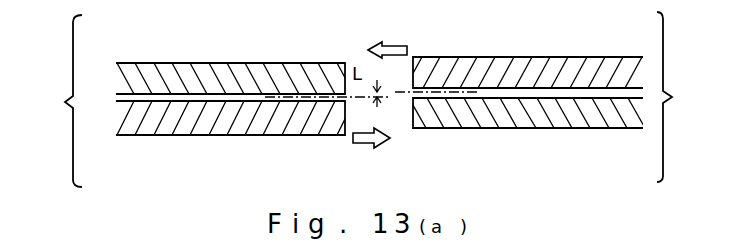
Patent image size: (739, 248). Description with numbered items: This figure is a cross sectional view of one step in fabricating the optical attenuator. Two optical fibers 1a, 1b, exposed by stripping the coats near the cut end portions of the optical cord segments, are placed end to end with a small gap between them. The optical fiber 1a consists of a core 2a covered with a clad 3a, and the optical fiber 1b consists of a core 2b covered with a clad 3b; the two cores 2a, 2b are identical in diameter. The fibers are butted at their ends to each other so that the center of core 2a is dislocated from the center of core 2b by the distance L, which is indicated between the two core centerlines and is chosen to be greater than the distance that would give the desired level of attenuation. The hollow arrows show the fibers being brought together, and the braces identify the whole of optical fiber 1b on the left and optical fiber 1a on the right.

The optical fiber 1a is at (555, 97).
The optical fiber 1b is at (203, 101).
The core 2a is at (543, 93).
The core 2b is at (184, 103).
The clad 3a is at (555, 58).
The clad 3b is at (182, 64).